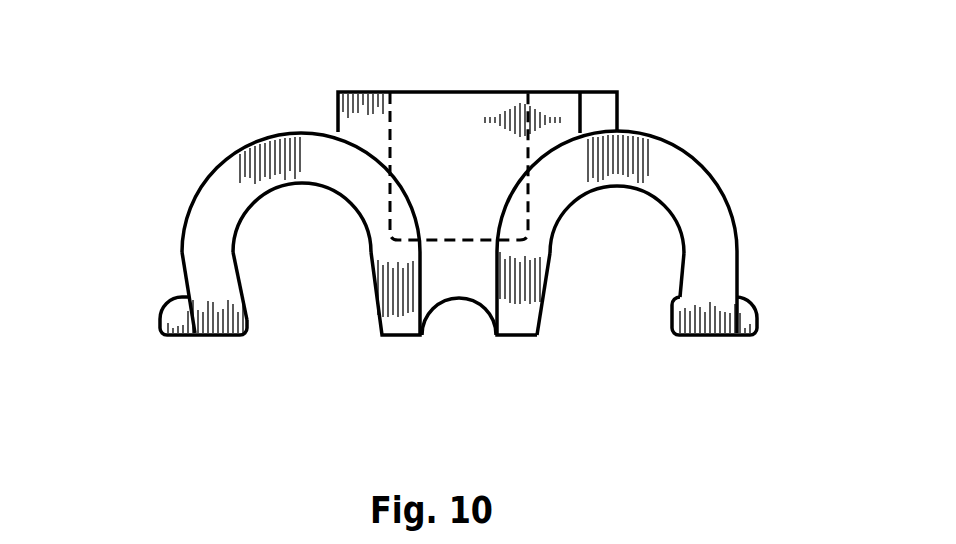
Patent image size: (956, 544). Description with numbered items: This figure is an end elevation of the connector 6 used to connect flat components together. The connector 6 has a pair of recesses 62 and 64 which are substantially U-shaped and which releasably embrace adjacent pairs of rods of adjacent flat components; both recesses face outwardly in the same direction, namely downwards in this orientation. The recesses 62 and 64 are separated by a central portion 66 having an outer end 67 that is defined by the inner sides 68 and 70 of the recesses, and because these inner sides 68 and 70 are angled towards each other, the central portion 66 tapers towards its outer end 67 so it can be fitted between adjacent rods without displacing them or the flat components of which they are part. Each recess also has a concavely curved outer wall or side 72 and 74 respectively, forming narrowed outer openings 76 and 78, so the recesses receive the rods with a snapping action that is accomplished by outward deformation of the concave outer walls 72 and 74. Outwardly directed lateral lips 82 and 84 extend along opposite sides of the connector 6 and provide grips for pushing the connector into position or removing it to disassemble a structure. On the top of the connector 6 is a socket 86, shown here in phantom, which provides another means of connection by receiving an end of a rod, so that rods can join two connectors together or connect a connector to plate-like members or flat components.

The connector 6 is at (700, 120).
The recess 62 is at (303, 262).
The recess 64 is at (617, 260).
The central portion 66 is at (522, 315).
The outer end 67 is at (407, 337).
The inner side 68 is at (377, 323).
The inner side 70 is at (543, 323).
The concavely curved outer wall 72 is at (236, 255).
The concavely curved outer wall 74 is at (683, 265).
The narrowed outer opening 76 is at (315, 335).
The narrowed outer opening 78 is at (655, 327).
The lateral lip 82 is at (163, 307).
The lateral lip 84 is at (737, 298).
The socket 86 is at (447, 135).